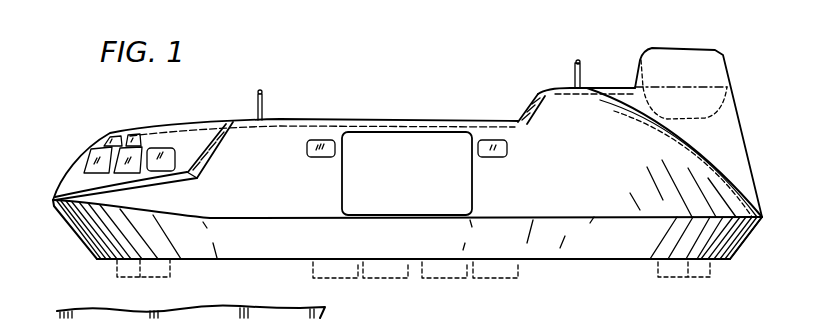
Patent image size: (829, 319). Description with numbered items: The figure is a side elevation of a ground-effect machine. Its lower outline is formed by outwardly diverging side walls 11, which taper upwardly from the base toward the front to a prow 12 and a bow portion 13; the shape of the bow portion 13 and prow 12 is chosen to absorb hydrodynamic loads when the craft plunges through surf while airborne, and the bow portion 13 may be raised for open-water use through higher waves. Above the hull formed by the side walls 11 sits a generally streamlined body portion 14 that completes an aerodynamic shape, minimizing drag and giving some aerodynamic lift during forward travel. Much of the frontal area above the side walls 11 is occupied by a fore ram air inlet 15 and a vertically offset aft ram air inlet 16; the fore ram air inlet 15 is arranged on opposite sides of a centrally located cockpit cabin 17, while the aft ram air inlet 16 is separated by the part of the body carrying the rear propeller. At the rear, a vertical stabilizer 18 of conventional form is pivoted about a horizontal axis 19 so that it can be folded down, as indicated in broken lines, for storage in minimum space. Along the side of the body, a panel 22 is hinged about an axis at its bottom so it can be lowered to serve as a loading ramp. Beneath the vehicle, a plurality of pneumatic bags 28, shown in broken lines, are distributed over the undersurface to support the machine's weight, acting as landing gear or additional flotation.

The side walls 11 is at (558, 250).
The prow 12 is at (85, 246).
The bow portion 13 is at (76, 217).
The body portion 14 is at (227, 109).
The fore ram air inlet 15 is at (206, 148).
The aft ram air inlet 16 is at (527, 117).
The cockpit cabin 17 is at (104, 141).
The vertical stabilizer 18 is at (664, 48).
The horizontal axis 19 is at (640, 68).
The panel 22 is at (393, 143).
The pneumatic bags 28 is at (160, 277).